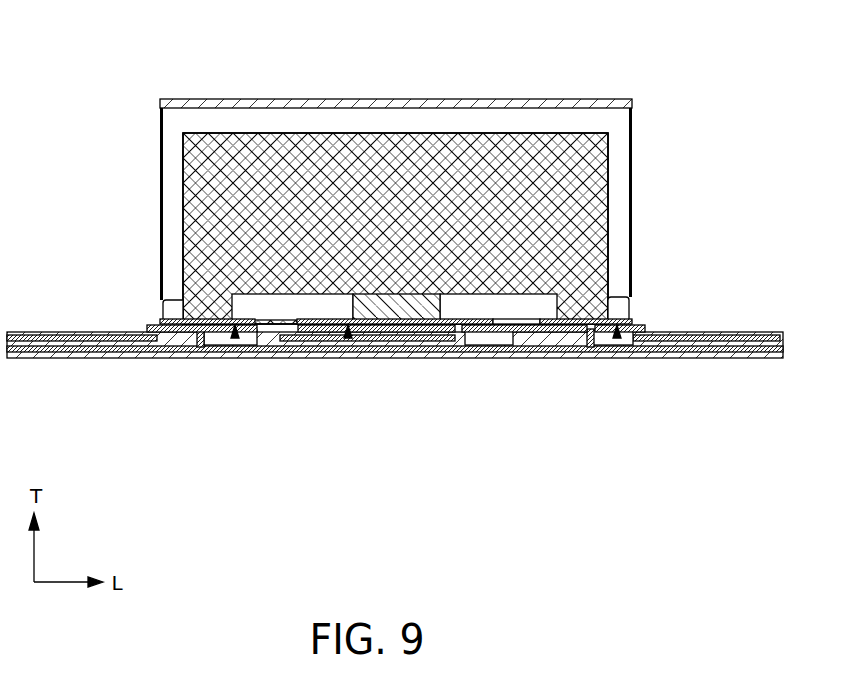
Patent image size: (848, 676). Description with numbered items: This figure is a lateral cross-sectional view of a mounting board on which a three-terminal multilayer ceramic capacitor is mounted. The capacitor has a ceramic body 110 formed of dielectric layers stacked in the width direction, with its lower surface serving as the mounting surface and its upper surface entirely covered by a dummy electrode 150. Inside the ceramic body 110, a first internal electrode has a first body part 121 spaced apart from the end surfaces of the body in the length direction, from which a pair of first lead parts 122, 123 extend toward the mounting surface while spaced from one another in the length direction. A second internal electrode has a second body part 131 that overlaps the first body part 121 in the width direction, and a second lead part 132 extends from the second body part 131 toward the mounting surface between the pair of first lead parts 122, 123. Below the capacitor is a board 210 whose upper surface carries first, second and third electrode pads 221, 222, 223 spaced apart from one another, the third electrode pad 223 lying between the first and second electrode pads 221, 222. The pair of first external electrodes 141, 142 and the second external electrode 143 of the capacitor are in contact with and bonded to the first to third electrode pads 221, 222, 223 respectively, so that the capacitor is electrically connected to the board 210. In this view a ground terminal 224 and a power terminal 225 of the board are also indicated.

The ceramic body 110 is at (328, 118).
The dummy electrode 150 is at (443, 99).
The second body part 131 is at (590, 172).
The first body part 121 is at (590, 213).
The first lead part 123 is at (608, 300).
The first lead part 122 is at (200, 305).
The second lead part 132 is at (400, 316).
The board 210 is at (105, 358).
The first electrode pad 221 is at (183, 332).
The second electrode pad 222 is at (570, 332).
The third electrode pad 223 is at (485, 332).
The ground terminal 224 is at (757, 341).
The power terminal 225 is at (703, 352).
The first external electrode 141 is at (235, 338).
The first external electrode 142 is at (617, 338).
The second external electrode 143 is at (348, 338).